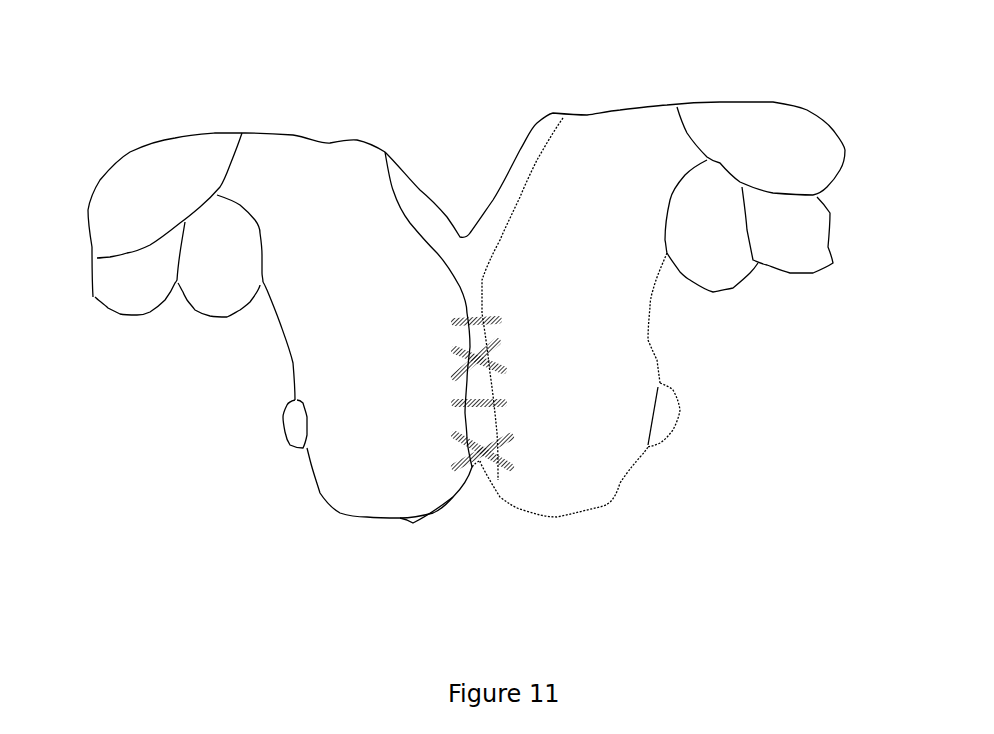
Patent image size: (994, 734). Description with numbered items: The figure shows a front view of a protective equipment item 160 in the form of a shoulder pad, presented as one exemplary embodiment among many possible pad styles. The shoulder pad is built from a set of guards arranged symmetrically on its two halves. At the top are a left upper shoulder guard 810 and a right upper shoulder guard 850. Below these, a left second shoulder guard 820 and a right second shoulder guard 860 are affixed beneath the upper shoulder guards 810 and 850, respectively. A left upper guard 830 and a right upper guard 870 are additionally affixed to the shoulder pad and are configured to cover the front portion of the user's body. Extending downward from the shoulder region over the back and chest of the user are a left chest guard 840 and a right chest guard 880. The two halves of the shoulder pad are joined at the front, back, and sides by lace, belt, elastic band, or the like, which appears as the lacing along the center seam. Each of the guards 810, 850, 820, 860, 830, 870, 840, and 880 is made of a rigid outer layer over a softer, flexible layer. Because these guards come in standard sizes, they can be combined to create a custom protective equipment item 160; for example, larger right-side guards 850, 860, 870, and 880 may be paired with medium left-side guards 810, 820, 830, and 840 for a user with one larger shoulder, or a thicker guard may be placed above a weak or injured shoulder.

The protective equipment item 160 is at (298, 82).
The left upper shoulder guard 810 is at (142, 184).
The left second shoulder guard 820 is at (142, 283).
The left upper guard 830 is at (225, 293).
The left chest guard 840 is at (335, 448).
The right upper shoulder guard 850 is at (793, 145).
The right second shoulder guard 860 is at (792, 238).
The right upper guard 870 is at (718, 257).
The right chest guard 880 is at (618, 402).